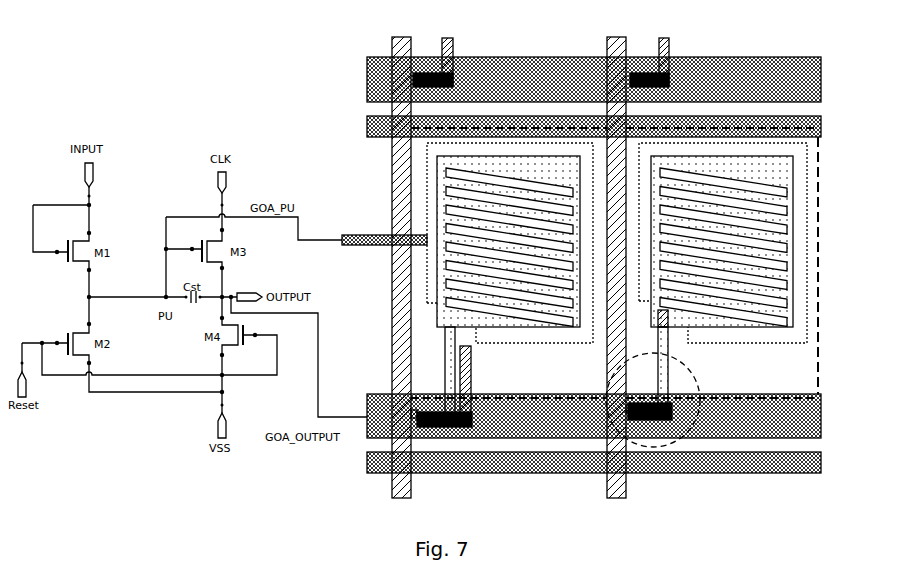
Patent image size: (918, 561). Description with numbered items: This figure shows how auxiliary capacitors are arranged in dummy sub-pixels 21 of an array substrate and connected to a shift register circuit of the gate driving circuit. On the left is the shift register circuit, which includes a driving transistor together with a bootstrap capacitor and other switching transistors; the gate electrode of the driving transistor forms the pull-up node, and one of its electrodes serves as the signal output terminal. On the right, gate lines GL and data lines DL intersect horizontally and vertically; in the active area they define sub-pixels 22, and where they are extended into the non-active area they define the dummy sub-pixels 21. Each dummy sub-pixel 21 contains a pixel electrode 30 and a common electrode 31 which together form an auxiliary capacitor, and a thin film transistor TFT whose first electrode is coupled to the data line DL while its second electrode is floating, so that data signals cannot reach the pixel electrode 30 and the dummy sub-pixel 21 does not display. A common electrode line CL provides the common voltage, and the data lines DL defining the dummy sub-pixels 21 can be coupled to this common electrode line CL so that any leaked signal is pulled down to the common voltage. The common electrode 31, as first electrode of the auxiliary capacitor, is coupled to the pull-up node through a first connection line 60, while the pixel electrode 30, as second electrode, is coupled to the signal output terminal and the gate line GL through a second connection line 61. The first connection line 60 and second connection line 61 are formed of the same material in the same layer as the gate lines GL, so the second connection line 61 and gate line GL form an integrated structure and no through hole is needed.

The dummy sub-pixel 21 is at (427, 328).
The sub-pixel 22 is at (805, 356).
The pixel electrode 30 is at (780, 173).
The common electrode 31 is at (800, 307).
The first connection line 60 is at (368, 234).
The second connection line 61 is at (445, 357).
The gate line GL is at (821, 80).
The common electrode line CL is at (821, 125).
The data line DL is at (392, 158).
The thin film transistor TFT is at (683, 378).